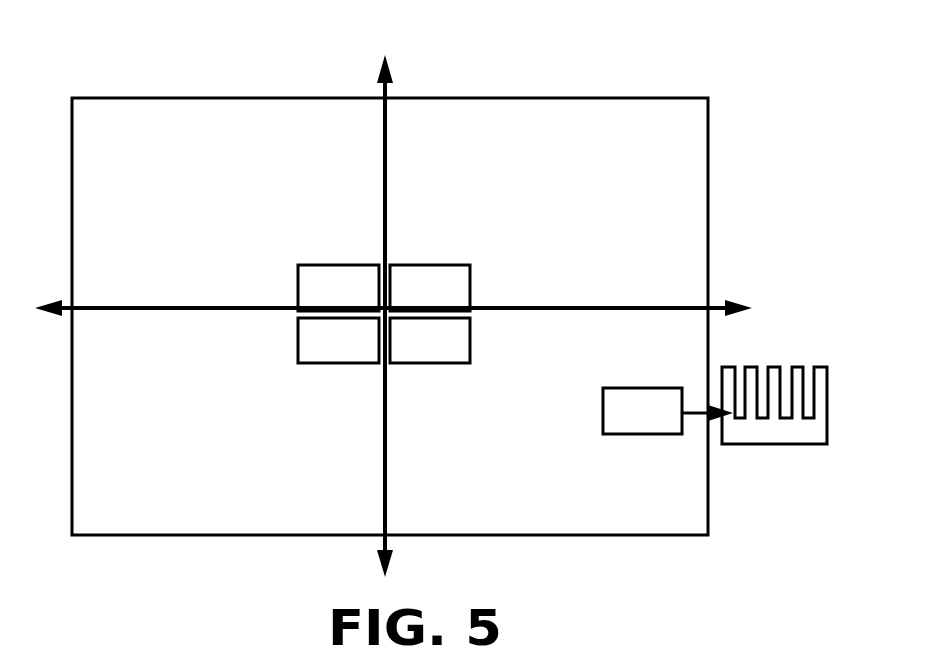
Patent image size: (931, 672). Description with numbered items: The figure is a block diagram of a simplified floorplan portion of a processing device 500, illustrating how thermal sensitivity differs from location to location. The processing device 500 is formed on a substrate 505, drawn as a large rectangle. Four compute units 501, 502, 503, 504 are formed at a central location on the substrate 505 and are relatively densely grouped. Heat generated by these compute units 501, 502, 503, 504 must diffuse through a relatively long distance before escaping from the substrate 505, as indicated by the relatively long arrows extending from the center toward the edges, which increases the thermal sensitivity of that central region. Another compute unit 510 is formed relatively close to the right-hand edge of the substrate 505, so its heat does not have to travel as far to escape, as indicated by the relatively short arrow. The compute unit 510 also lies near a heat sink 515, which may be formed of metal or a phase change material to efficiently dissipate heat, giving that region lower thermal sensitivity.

The processing device 500 is at (700, 40).
The substrate 505 is at (709, 190).
The compute unit 501 is at (322, 298).
The compute unit 502 is at (414, 298).
The compute unit 503 is at (322, 352).
The compute unit 504 is at (414, 352).
The compute unit 510 is at (625, 422).
The heat sink 515 is at (773, 445).